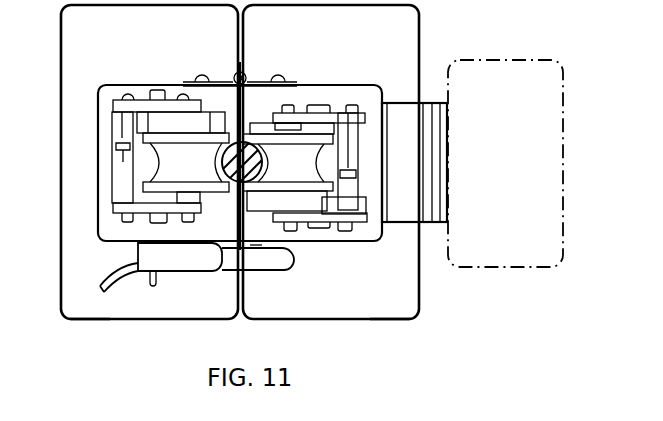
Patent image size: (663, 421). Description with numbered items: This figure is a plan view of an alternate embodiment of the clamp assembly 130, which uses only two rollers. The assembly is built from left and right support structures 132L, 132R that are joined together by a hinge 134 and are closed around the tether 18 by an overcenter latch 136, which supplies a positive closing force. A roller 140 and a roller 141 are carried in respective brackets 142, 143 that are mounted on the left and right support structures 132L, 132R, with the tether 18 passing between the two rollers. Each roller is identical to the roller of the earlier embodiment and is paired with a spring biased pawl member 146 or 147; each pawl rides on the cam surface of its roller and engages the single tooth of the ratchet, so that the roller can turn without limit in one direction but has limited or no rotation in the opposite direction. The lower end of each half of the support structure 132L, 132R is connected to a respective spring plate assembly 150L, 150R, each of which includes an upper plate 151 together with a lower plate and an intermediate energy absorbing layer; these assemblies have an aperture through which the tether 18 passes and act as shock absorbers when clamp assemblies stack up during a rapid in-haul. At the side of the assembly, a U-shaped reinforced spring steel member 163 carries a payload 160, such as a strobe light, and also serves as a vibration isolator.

The tether 18 is at (265, 142).
The clamp assembly 130 is at (463, 312).
The left support structure 132L is at (112, 84).
The right support structure 132R is at (373, 84).
The hinge 134 is at (222, 80).
The overcenter latch 136 is at (175, 266).
The roller 140 is at (190, 175).
The roller 141 is at (303, 174).
The bracket 142 is at (150, 206).
The bracket 143 is at (330, 215).
The spring biased pawl member 146 is at (146, 128).
The spring biased pawl member 147 is at (325, 200).
The left spring plate assembly 150L is at (161, 322).
The right spring plate assembly 150R is at (265, 322).
The upper plate 151 is at (66, 318).
The payload 160 is at (510, 58).
The U-shaped reinforced spring steel member 163 is at (430, 100).